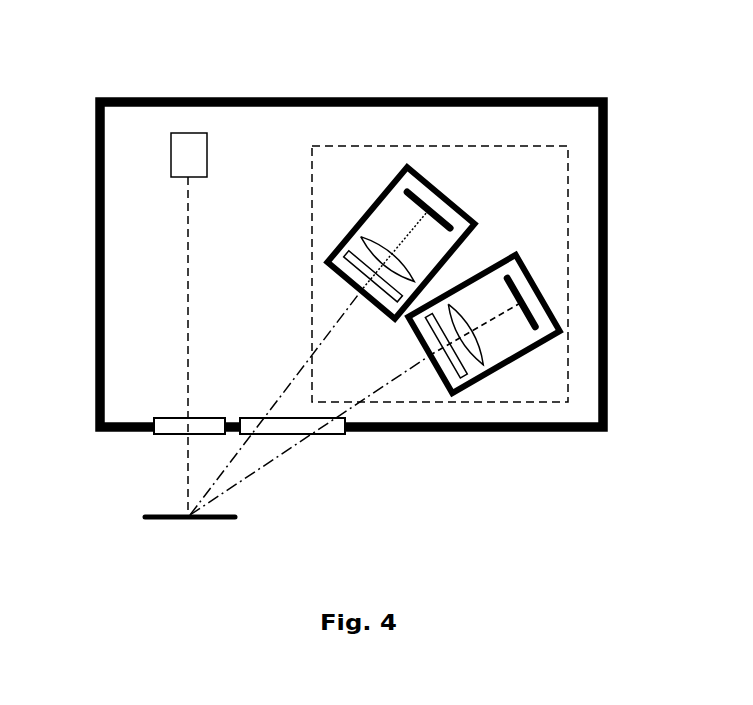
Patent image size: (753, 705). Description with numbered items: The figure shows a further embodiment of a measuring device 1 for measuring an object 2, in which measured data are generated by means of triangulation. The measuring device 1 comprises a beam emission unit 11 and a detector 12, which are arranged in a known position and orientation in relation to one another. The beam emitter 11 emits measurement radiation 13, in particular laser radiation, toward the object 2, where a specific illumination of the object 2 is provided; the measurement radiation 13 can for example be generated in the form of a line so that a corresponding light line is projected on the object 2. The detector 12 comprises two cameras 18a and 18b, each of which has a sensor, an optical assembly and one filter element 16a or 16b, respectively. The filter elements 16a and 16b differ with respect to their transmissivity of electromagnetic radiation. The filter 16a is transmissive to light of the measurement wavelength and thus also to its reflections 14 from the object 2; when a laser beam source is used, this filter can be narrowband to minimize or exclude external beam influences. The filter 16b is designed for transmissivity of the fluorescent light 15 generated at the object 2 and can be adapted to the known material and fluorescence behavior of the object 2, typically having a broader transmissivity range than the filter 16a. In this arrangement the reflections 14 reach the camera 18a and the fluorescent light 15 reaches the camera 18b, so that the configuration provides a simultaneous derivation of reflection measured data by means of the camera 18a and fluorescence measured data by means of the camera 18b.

The measuring device 1 is at (430, 58).
The object 2 is at (160, 487).
The beam emission unit 11 is at (144, 113).
The detector 12 is at (550, 186).
The measurement radiation 13 is at (107, 346).
The reflections 14 is at (427, 409).
The fluorescent light 15 is at (309, 296).
The filter element 16a is at (495, 394).
The filter element 16b is at (304, 176).
The camera 18a is at (598, 327).
The camera 18b is at (493, 140).